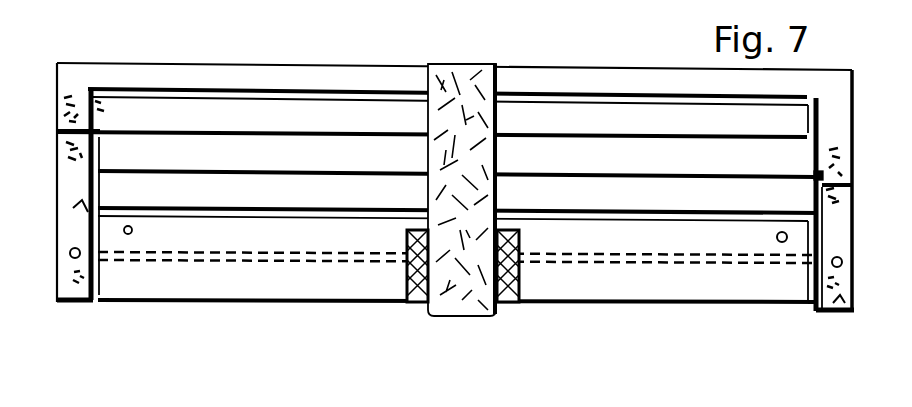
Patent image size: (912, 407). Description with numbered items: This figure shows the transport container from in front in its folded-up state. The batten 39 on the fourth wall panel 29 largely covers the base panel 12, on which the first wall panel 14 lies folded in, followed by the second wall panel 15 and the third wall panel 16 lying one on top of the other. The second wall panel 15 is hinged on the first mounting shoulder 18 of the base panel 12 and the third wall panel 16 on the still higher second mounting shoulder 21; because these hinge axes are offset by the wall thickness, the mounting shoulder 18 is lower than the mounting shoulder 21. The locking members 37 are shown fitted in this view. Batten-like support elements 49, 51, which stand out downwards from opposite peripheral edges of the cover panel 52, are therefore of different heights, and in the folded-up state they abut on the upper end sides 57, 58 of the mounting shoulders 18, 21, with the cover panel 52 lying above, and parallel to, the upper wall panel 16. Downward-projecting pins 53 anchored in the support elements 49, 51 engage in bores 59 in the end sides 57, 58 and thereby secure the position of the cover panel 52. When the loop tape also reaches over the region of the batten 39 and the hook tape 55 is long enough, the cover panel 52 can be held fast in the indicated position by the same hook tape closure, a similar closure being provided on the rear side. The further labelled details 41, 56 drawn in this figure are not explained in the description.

The base panel 12 is at (226, 233).
The first wall panel 14 is at (664, 192).
The second wall panel 15 is at (611, 152).
The third wall panel 16 is at (552, 108).
The first mounting shoulder 18 is at (853, 259).
The second mounting shoulder 21 is at (52, 256).
The fourth wall panel 29 is at (261, 305).
The locking member 37 is at (100, 193).
The batten 39 is at (170, 238).
The hole 41 is at (777, 238).
The support element 49 is at (830, 125).
The support element 51 is at (60, 105).
The cover panel 52 is at (370, 78).
The pin 53 is at (100, 110).
The hook tape 55 is at (432, 317).
The spacer block 56 is at (522, 278).
The upper end side 57 is at (810, 200).
The upper end side 58 is at (100, 152).
The bore 59 is at (100, 164).